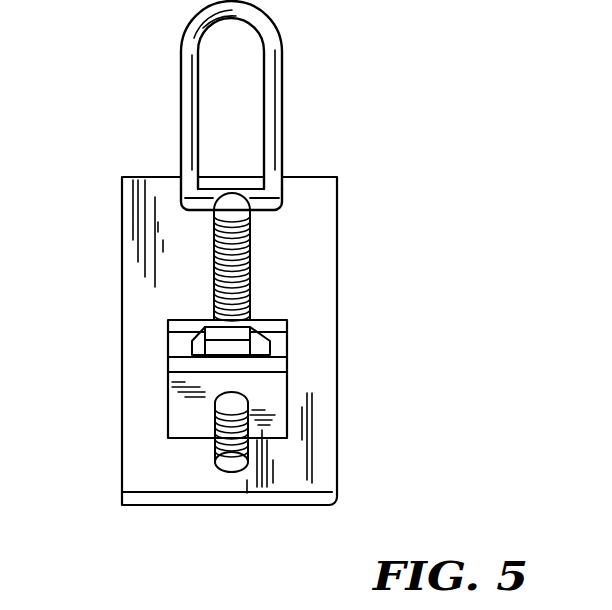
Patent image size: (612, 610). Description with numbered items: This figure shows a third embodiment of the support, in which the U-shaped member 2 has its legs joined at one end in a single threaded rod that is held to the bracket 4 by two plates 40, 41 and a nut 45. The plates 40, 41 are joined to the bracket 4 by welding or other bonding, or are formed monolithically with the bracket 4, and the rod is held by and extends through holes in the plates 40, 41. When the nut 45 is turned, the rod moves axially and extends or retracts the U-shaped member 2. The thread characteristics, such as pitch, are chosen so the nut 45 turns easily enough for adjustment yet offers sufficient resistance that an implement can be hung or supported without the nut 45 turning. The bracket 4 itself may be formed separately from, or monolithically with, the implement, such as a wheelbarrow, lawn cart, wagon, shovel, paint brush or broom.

The shackle 2 is at (276, 96).
The bracket 4 is at (325, 230).
The plate 40 is at (287, 325).
The plate 41 is at (283, 388).
The nut 45 is at (193, 343).